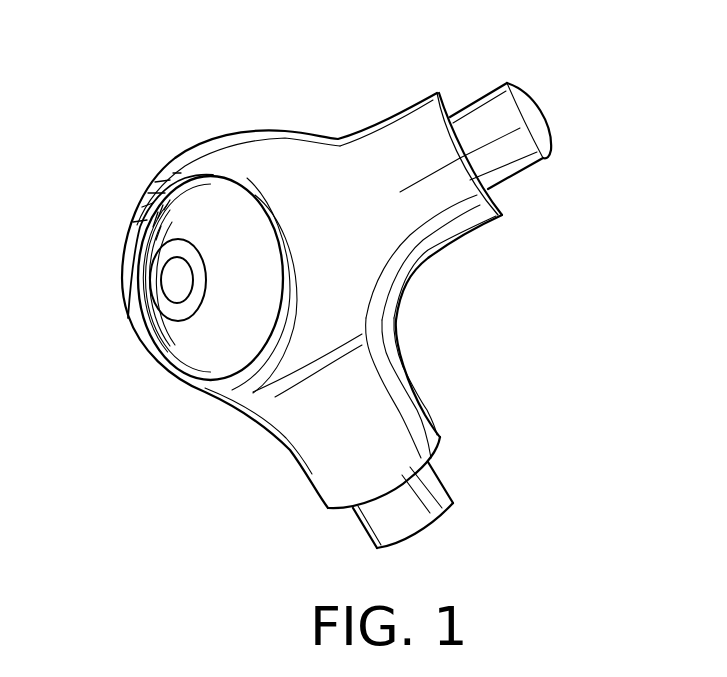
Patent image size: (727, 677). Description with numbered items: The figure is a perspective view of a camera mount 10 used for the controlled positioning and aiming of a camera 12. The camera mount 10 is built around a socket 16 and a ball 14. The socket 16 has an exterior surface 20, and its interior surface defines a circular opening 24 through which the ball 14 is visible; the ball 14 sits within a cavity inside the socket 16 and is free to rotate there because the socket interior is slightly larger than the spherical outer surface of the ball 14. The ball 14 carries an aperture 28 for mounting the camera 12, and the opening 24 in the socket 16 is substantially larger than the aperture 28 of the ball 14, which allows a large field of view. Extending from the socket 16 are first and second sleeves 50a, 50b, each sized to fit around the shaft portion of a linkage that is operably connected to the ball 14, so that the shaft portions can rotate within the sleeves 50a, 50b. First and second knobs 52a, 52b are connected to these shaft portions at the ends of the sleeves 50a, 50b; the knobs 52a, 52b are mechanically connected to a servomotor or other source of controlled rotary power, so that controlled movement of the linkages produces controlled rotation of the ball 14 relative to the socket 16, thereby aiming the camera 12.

The camera mount 10 is at (256, 120).
The camera 12 is at (178, 277).
The ball 14 is at (177, 380).
The socket 16 is at (210, 157).
The exterior surface 20 is at (282, 152).
The opening 24 is at (137, 203).
The aperture 28 is at (167, 318).
The first sleeve 50a is at (455, 220).
The second sleeve 50b is at (417, 423).
The first knob 52a is at (505, 122).
The second knob 52b is at (430, 487).